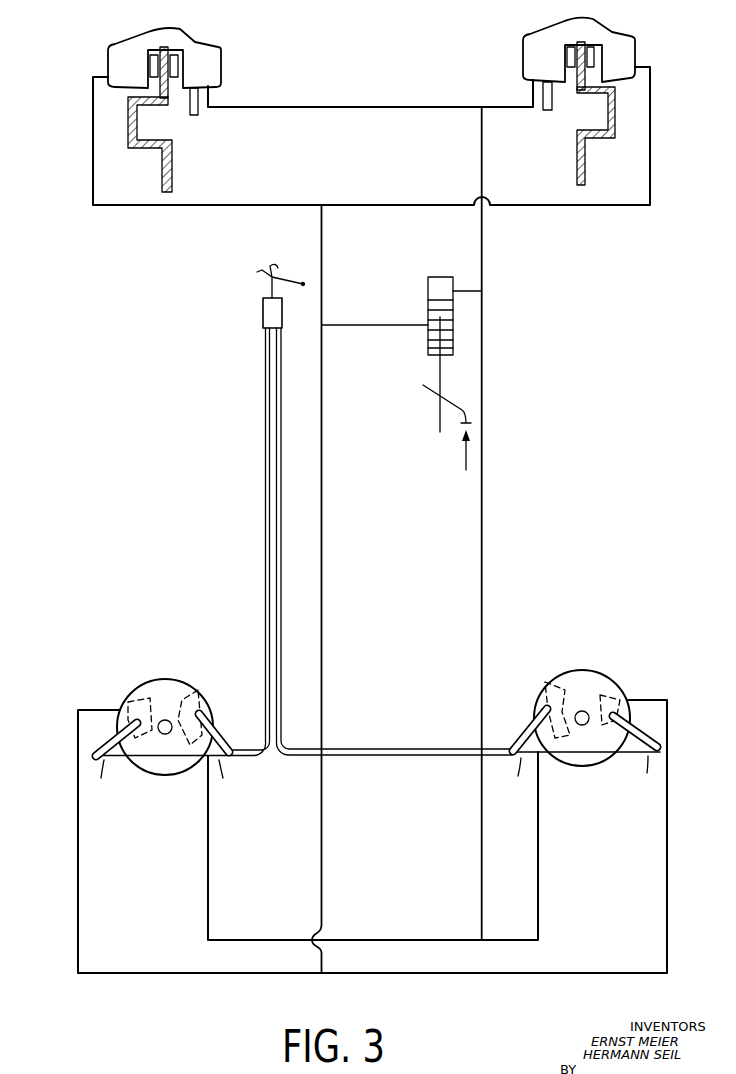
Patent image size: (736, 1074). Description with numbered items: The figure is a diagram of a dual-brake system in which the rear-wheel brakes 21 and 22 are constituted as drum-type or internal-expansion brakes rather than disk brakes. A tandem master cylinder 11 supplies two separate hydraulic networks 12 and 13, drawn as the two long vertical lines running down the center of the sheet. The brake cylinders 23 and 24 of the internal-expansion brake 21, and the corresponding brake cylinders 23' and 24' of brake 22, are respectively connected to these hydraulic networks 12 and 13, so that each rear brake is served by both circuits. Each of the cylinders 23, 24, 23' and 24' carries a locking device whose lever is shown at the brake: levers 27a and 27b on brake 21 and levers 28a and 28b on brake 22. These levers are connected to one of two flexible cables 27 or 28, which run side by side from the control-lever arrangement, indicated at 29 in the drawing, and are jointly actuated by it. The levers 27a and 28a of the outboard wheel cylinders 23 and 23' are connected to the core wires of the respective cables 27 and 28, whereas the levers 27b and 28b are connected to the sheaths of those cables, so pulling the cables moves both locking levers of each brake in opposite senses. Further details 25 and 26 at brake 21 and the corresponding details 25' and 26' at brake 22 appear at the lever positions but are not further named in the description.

The tandem master cylinder 11 is at (428, 293).
The hydraulic network 12 is at (323, 523).
The hydraulic network 13 is at (483, 520).
The rear-wheel brake 21 is at (143, 713).
The rear-wheel brake 22 is at (606, 706).
The brake cylinder 23 is at (118, 704).
The brake cylinder 24 is at (199, 703).
The valve port 25 is at (102, 785).
The valve port 26 is at (232, 785).
The flexible cable 27 is at (258, 411).
The flexible cable 28 is at (264, 367).
The connector head 29 is at (246, 319).
The lever 27a is at (110, 742).
The lever 27b is at (228, 742).
The brake cylinder 23' is at (640, 695).
The brake cylinder 24' is at (546, 691).
The valve port 25' is at (643, 777).
The valve port 26' is at (509, 780).
The lever 28a is at (640, 740).
The lever 28b is at (522, 742).